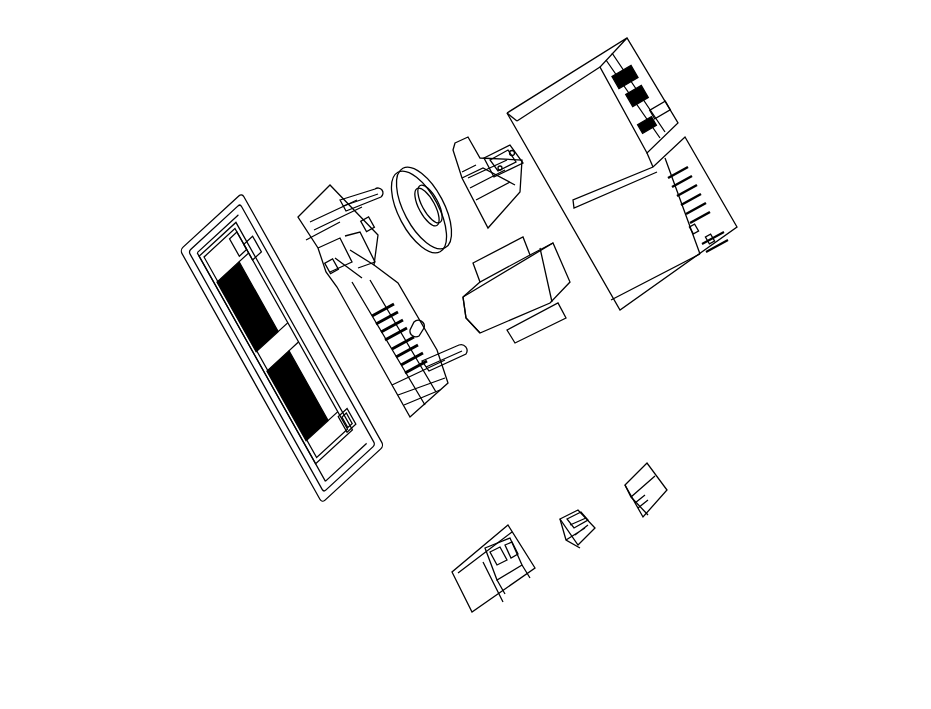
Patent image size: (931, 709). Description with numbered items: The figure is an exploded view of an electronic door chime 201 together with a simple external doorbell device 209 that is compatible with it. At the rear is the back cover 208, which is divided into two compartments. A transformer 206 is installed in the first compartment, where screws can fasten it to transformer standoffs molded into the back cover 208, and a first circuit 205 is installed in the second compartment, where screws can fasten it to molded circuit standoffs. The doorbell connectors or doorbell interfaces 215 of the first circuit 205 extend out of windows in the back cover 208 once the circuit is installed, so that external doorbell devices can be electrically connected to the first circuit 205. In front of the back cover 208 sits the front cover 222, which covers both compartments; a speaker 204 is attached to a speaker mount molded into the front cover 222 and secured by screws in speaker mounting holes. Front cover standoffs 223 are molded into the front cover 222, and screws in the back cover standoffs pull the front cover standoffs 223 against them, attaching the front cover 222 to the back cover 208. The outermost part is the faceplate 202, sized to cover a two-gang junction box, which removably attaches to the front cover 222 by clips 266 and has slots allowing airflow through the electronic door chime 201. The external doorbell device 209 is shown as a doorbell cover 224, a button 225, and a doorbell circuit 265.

The electronic door chime 201 is at (173, 135).
The faceplate 202 is at (253, 390).
The speaker 204 is at (403, 168).
The first circuit 205 is at (460, 155).
The transformer 206 is at (538, 320).
The back cover 208 is at (705, 185).
The external doorbell device 209 is at (718, 467).
The doorbell interfaces 215 is at (495, 157).
The front cover 222 is at (322, 200).
The front cover standoffs 223 is at (453, 358).
The doorbell cover 224 is at (518, 577).
The button 225 is at (580, 535).
The doorbell circuit 265 is at (650, 483).
The clips 266 is at (343, 418).